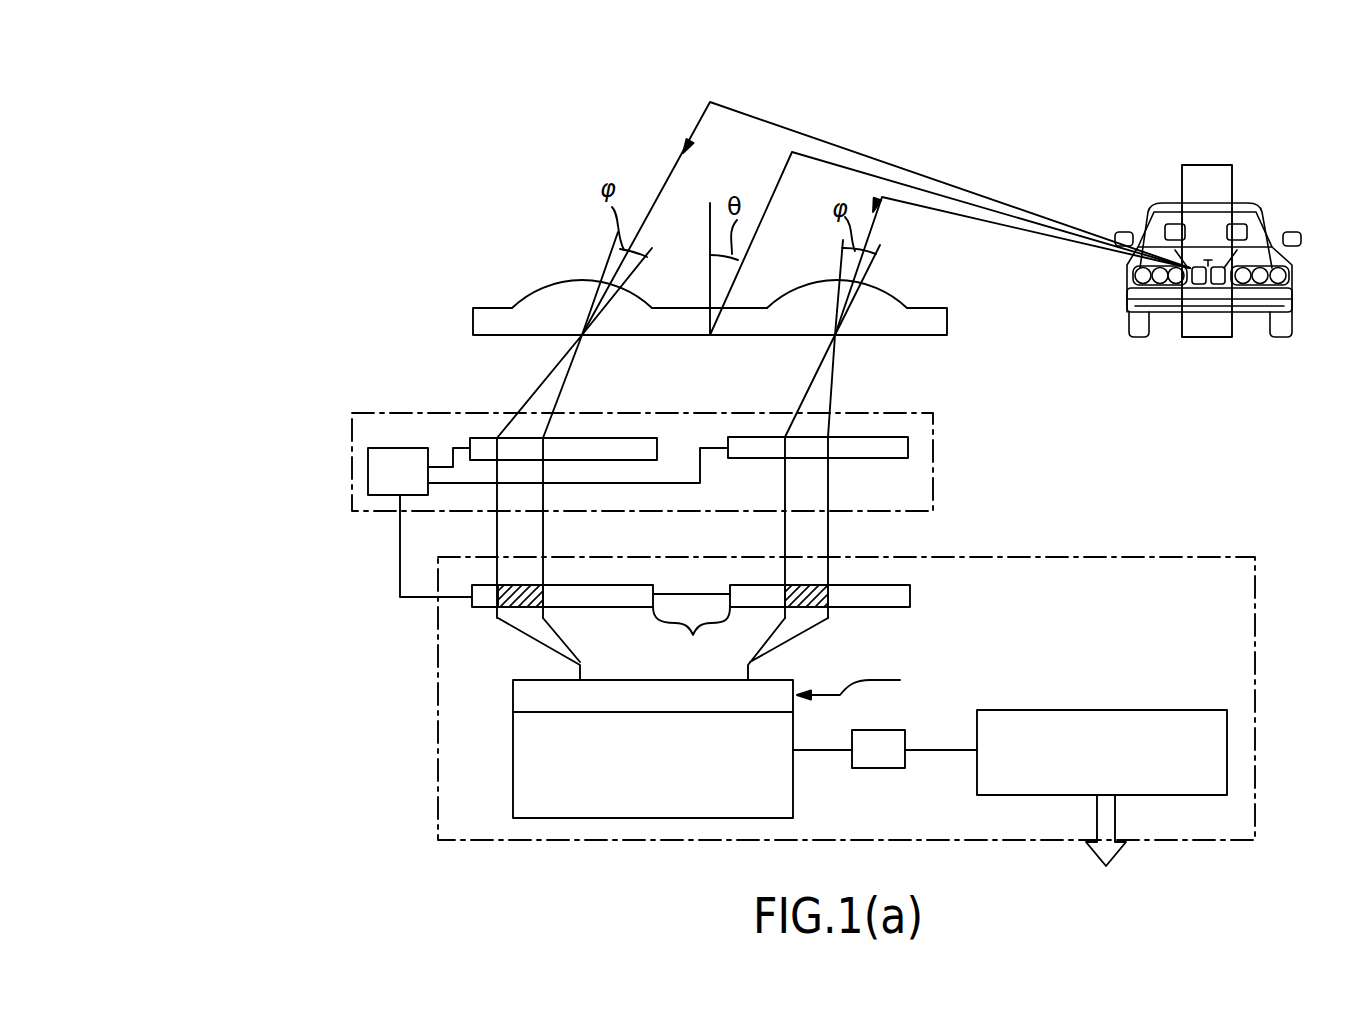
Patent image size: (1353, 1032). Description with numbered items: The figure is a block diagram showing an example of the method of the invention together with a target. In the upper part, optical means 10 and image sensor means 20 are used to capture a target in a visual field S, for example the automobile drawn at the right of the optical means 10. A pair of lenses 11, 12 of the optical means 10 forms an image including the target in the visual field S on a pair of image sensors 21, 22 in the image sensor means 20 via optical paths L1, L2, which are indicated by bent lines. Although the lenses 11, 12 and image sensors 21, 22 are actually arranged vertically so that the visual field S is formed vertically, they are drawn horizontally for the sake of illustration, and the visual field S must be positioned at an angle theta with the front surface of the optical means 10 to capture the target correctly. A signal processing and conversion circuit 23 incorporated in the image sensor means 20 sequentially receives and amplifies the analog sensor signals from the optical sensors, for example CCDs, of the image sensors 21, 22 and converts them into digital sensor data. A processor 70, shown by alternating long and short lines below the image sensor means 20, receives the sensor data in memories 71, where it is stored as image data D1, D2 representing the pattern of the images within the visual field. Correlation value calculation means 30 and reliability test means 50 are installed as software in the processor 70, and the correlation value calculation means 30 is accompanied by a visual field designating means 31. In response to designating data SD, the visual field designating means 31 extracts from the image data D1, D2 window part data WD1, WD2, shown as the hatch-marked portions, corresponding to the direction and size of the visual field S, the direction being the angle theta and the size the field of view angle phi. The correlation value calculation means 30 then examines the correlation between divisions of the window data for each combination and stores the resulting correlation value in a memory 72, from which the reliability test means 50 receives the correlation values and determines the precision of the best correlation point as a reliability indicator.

The optical means 10 is at (473, 308).
The lens 11 is at (548, 290).
The lens 12 is at (892, 297).
The image sensor means 20 is at (933, 463).
The image sensor 21 is at (470, 438).
The image sensor 22 is at (908, 437).
The signal processing and conversion circuit 23 is at (378, 467).
The correlation value calculation means 30 is at (513, 785).
The visual field designating means 31 is at (663, 617).
The reliability test means 50 is at (1112, 710).
The processor 70 is at (438, 728).
The memories 71 is at (691, 635).
The memory 72 is at (878, 768).
The optical path L1 is at (678, 150).
The optical path L2 is at (876, 213).
The visual field S is at (1232, 165).
The object (vehicle) I is at (1145, 212).
The image data D1 is at (580, 585).
The image data D2 is at (910, 587).
The window part data WD1 is at (537, 600).
The window part data WD2 is at (820, 602).
The designating data SD is at (866, 683).